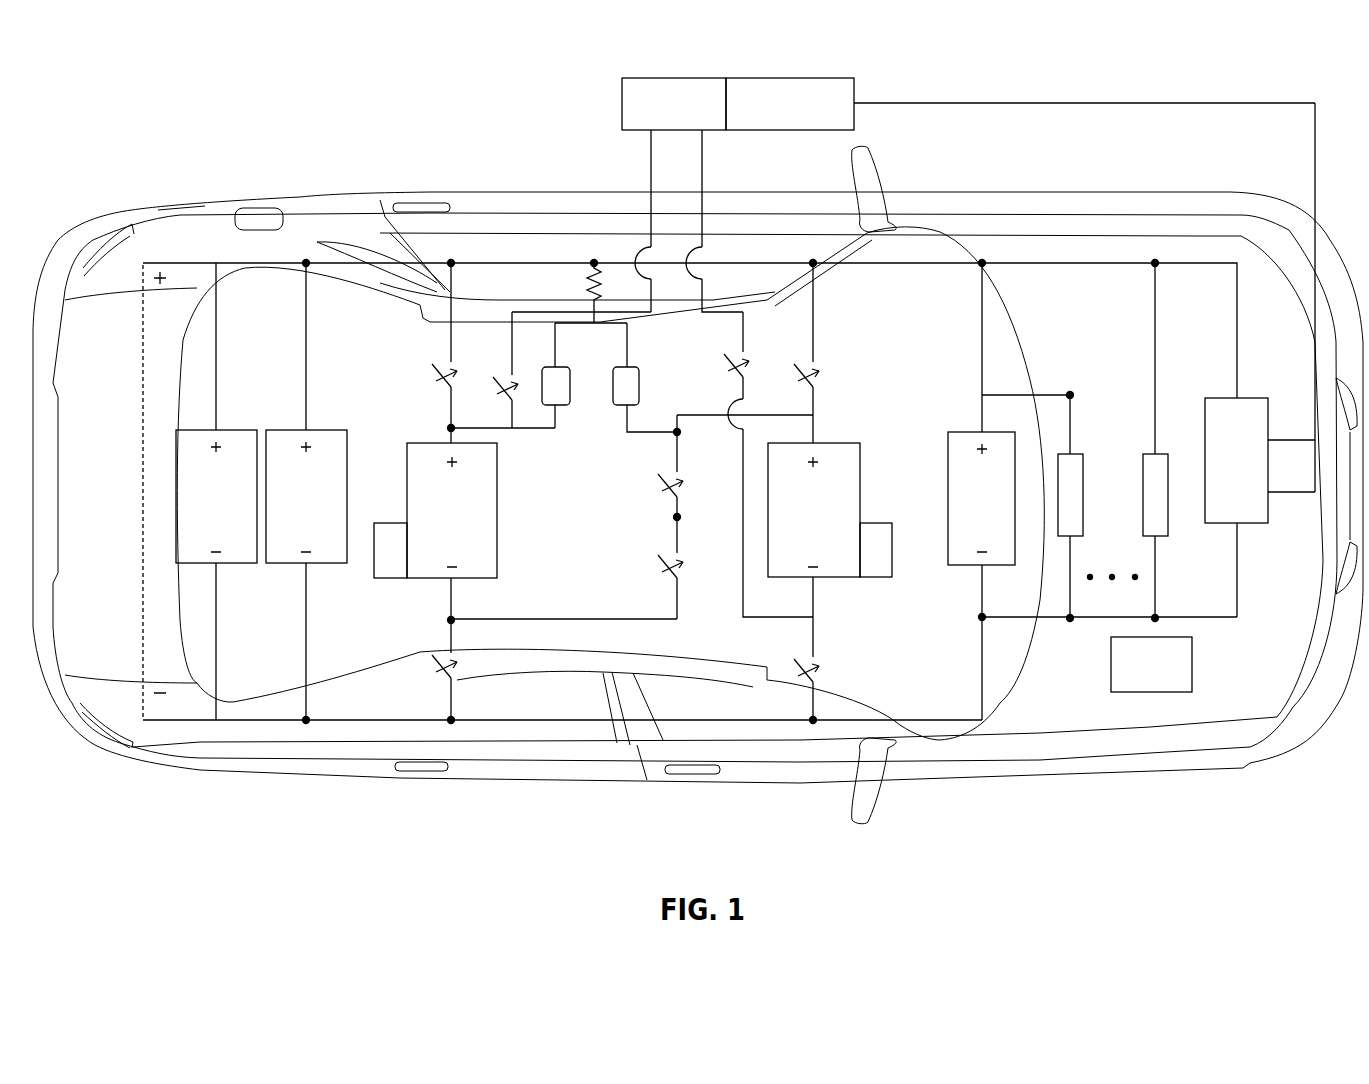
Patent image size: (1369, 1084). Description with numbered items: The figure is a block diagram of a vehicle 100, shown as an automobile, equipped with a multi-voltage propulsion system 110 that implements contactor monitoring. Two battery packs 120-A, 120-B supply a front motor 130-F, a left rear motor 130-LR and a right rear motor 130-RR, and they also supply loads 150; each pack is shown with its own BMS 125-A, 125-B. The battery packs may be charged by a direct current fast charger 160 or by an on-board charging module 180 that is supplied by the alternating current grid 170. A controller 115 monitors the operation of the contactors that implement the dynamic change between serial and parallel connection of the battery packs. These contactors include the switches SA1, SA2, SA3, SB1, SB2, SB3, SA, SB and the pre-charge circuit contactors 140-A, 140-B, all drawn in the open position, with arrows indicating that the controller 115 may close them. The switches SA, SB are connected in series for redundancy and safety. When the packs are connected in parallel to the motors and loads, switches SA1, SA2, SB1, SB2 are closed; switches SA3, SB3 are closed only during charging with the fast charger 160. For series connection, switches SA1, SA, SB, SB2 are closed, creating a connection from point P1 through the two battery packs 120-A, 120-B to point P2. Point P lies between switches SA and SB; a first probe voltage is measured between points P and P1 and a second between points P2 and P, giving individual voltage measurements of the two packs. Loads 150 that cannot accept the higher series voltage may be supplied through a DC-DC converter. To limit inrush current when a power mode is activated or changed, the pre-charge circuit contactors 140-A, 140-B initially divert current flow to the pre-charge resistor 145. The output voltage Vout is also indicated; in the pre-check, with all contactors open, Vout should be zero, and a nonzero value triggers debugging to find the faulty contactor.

The vehicle 100 is at (118, 758).
The multi-voltage propulsion system 110 is at (118, 209).
The controller 115 is at (1175, 677).
The battery pack 120-A is at (452, 531).
The battery pack 120-B is at (814, 550).
The BMS 125-A is at (392, 580).
The BMS 125-B is at (875, 578).
The left rear motor 130-LR is at (216, 491).
The right rear motor 130-RR is at (307, 492).
The front motor 130-F is at (1092, 490).
The pre-charge circuit contactor 140-A is at (562, 392).
The pre-charge circuit contactor 140-B is at (623, 392).
The pre-charge resistor 145 is at (592, 262).
The loads 150 is at (1080, 455).
The direct current fast charger (DCFC) 160 is at (696, 118).
The alternating current (AC) grid 170 is at (813, 118).
The on-board charging module (OBCM) 180 is at (1260, 475).
The switch SA1 is at (428, 353).
The switch SA2 is at (534, 670).
The switch SA3 is at (551, 370).
The switch SB1 is at (831, 352).
The switch SB2 is at (788, 689).
The switch SB3 is at (749, 464).
The switch SA is at (656, 568).
The switch SB is at (660, 481).
The point P is at (690, 520).
The point P1 is at (819, 741).
The point P2 is at (456, 247).
The output voltage Vout is at (141, 492).